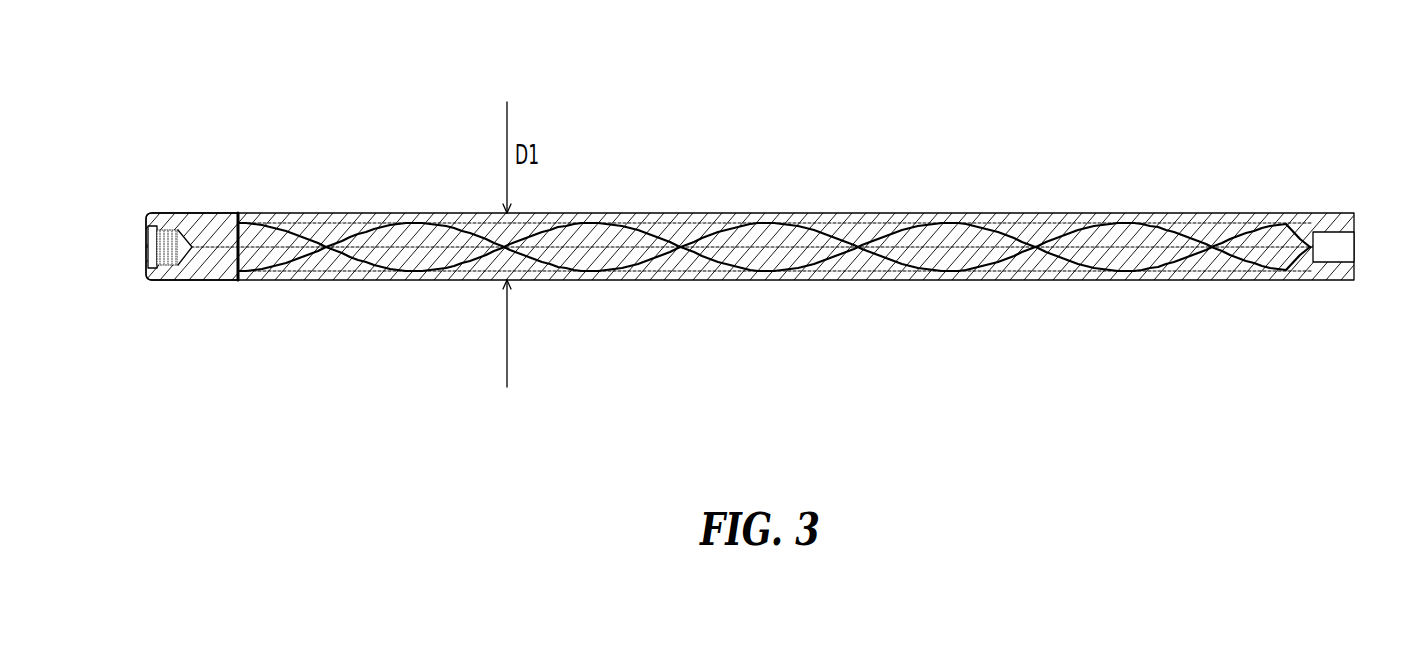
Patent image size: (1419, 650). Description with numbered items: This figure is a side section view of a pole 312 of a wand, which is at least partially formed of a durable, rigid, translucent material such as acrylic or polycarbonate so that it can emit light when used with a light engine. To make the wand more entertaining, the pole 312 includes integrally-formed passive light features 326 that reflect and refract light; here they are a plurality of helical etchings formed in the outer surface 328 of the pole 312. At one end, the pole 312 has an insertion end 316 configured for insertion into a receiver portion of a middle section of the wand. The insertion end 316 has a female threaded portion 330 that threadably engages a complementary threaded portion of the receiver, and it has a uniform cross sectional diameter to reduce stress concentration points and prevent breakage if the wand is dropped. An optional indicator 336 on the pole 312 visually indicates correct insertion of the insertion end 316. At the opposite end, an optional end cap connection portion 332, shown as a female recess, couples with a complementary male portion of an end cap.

The pole 312 is at (1344, 125).
The insertion end 316 is at (238, 307).
The passive light features 326 is at (913, 267).
The outer surface 328 is at (410, 212).
The threaded portion 330 is at (160, 247).
The end cap connection portion 332 is at (1352, 240).
The indicator 336 is at (238, 212).